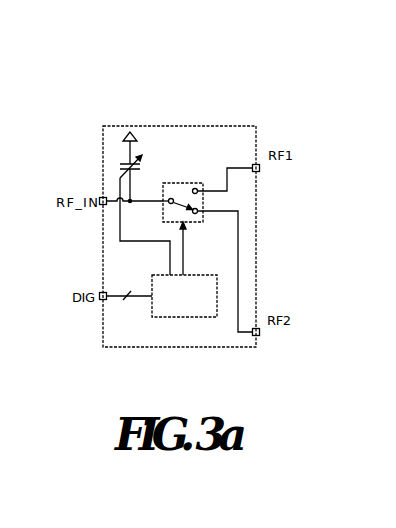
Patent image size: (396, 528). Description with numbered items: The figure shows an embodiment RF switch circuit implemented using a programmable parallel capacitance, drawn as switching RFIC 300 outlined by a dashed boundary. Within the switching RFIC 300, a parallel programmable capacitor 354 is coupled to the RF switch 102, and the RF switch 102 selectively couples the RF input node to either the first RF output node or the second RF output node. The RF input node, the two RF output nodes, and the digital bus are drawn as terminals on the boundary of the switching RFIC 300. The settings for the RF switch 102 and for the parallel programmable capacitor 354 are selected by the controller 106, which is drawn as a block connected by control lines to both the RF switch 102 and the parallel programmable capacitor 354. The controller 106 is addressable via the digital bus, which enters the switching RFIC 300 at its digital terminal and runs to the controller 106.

The switching RFIC 300 is at (173, 126).
The parallel programmable capacitor 354 is at (141, 167).
The RF switch 102 is at (203, 183).
The controller 106 is at (151, 275).